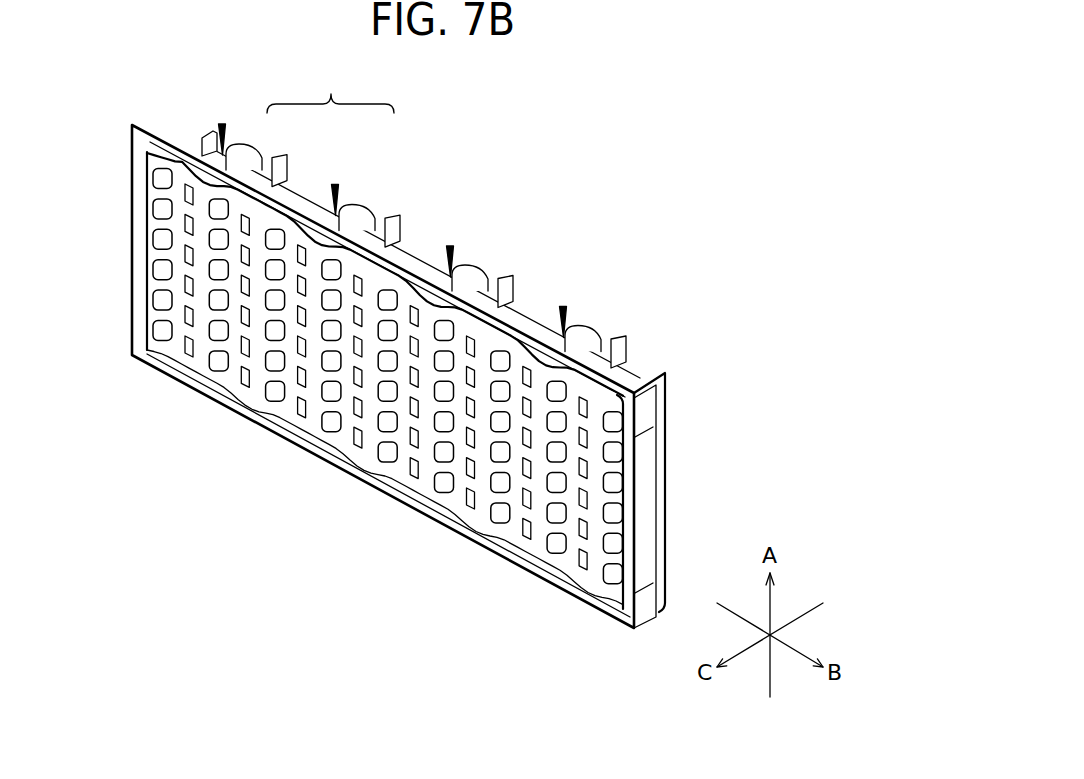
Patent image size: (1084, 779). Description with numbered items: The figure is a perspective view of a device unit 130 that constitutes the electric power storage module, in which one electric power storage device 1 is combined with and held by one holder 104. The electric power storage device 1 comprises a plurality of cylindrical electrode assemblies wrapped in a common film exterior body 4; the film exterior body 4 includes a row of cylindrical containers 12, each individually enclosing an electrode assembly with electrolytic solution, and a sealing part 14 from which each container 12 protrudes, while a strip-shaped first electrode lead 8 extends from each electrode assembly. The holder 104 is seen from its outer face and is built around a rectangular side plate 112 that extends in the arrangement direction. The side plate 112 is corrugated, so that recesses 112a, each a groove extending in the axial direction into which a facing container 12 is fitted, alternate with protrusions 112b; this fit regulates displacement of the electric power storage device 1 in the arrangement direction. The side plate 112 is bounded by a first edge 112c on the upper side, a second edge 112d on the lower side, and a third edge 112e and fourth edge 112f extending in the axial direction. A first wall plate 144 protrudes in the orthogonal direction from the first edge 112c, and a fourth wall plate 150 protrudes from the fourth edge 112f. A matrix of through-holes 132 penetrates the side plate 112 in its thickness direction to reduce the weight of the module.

The electric power storage device 1 is at (668, 368).
The film exterior body 4 is at (330, 86).
The first electrode lead 8 is at (222, 118).
The container 12 is at (254, 155).
The sealing part 14 is at (328, 188).
The holder 104 is at (128, 356).
The side plate 112 is at (572, 561).
The recess 112a is at (537, 553).
The protrusion 112b is at (515, 533).
The first edge 112c is at (357, 253).
The second edge 112d is at (353, 479).
The third edge 112e is at (133, 255).
The fourth edge 112f is at (629, 504).
The device unit 130 is at (338, 656).
The through-hole 132 is at (321, 420).
The first wall plate 144 is at (468, 300).
The fourth wall plate 150 is at (646, 473).